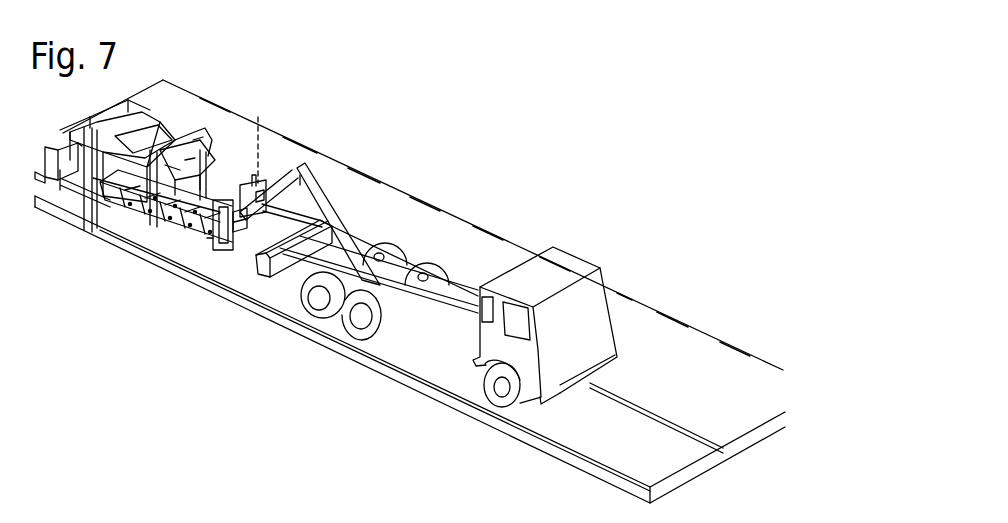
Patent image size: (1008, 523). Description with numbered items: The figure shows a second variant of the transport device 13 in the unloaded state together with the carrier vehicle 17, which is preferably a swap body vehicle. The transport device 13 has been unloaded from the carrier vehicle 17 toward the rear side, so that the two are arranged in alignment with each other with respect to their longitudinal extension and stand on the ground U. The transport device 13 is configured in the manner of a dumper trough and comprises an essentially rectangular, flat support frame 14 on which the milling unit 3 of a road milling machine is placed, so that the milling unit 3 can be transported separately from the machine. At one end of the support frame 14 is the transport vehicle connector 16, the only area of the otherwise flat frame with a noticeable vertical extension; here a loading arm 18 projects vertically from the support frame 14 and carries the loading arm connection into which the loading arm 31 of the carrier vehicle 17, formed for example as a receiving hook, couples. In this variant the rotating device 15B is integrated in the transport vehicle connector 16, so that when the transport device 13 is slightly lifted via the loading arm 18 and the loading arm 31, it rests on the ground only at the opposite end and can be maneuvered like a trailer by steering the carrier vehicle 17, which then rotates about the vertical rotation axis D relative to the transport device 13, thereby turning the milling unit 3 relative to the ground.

The milling unit 3 is at (162, 182).
The transport device 13 is at (243, 204).
The support frame 14 is at (208, 241).
The second rotating device 15B is at (260, 195).
The transport vehicle connector 16 is at (240, 217).
The carrier vehicle 17 is at (468, 258).
The loading arm 18 is at (232, 217).
The loading arm of the carrier vehicle 31 is at (102, 128).
The vertical rotation axis D is at (259, 134).
The ground surface U is at (565, 452).